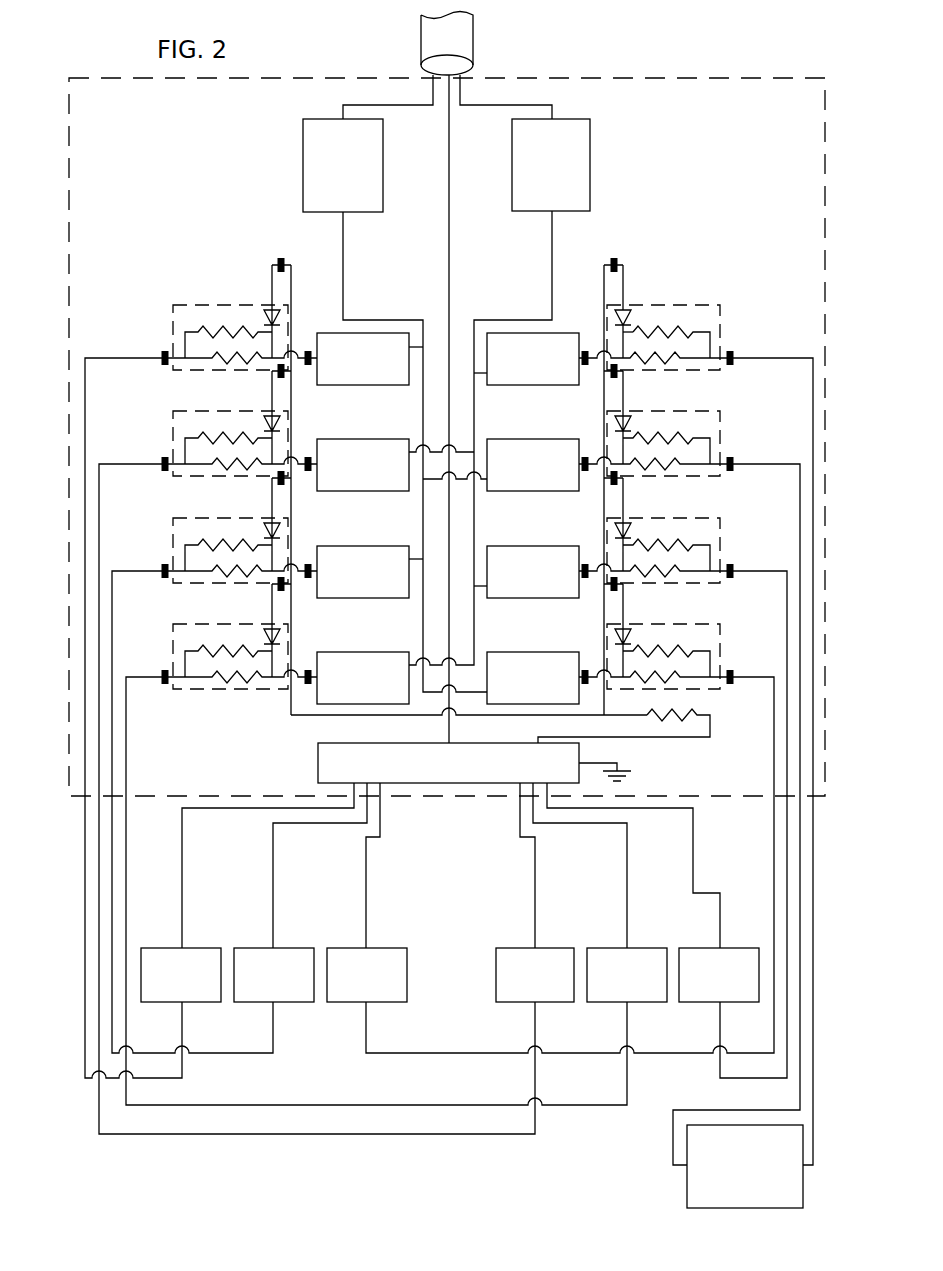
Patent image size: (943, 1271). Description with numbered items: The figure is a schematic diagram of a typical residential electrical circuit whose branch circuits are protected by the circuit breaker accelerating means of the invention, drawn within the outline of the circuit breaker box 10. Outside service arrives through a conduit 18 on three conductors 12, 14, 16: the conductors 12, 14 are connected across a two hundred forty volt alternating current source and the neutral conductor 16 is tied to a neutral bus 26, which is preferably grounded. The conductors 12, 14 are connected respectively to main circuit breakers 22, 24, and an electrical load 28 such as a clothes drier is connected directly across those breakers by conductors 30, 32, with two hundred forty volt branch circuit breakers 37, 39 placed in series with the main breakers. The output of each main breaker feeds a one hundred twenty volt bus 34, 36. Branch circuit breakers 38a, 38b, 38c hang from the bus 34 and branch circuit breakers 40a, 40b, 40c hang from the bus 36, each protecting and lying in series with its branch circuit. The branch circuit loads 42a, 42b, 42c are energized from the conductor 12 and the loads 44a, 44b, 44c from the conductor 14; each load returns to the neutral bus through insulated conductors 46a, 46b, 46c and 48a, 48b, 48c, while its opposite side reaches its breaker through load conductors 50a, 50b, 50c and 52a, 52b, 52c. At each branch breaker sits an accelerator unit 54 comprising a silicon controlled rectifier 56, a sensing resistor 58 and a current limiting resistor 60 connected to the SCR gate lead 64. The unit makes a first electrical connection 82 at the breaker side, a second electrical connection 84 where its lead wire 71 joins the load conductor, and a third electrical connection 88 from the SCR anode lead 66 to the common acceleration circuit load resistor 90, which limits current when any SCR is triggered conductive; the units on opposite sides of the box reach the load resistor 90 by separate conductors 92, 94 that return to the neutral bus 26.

The circuit breaker box 10 is at (640, 78).
The conductor 12 is at (355, 105).
The conductor 14 is at (535, 105).
The neutral conductor 16 is at (449, 153).
The conduit 18 is at (473, 30).
The main circuit breaker 22 is at (303, 145).
The main circuit breaker 24 is at (590, 134).
The neutral bus 26 is at (474, 763).
The electrical load 28 is at (687, 1195).
The conductor 30 is at (802, 990).
The conductor 32 is at (814, 1024).
The 120 volt bus 34 is at (423, 506).
The 120 volt bus 36 is at (476, 503).
The 240 volt branch circuit breaker 37 is at (538, 438).
The 240 volt branch circuit breaker 39 is at (525, 333).
The 120 volt branch circuit breaker 38a is at (377, 387).
The 120 volt branch circuit breaker 38b is at (377, 600).
The 120 volt branch circuit breaker 38c is at (538, 652).
The 120 volt branch circuit breaker 40a is at (377, 493).
The 120 volt branch circuit breaker 40b is at (380, 707).
The 120 volt branch circuit breaker 40c is at (537, 599).
The branch circuit load 42a is at (181, 975).
The branch circuit load 42b is at (274, 975).
The branch circuit load 42c is at (367, 975).
The branch circuit load 44a is at (535, 975).
The branch circuit load 44b is at (627, 975).
The branch circuit load 44c is at (719, 975).
The insulated conductor 46a is at (182, 880).
The insulated conductor 46b is at (273, 880).
The insulated conductor 46c is at (366, 880).
The insulated conductor 48a is at (535, 883).
The insulated conductor 48b is at (627, 883).
The insulated conductor 48c is at (718, 905).
The load conductor 50a is at (85, 858).
The load conductor 50b is at (112, 937).
The load conductor 50c is at (773, 842).
The load conductor 52a is at (100, 1096).
The load conductor 52b is at (120, 1097).
The load conductor 52c is at (787, 897).
The accelerator unit 54 is at (455, 466).
The silicon controlled rectifier 56 is at (617, 325).
The sensing resistor 58 is at (685, 362).
The current limiting resistor 60 is at (688, 330).
The gate lead 64 is at (633, 330).
The anode lead 66 is at (625, 290).
The lead wire 71 is at (800, 653).
The first electrical connection 82 is at (309, 350).
The second electrical connection 84 is at (162, 352).
The third electrical connection 88 is at (281, 258).
The load resistor 90 is at (668, 720).
The conductor 92 is at (292, 710).
The conductor 94 is at (605, 697).